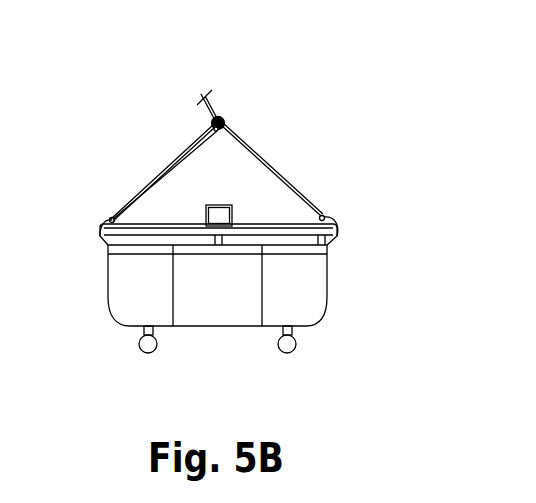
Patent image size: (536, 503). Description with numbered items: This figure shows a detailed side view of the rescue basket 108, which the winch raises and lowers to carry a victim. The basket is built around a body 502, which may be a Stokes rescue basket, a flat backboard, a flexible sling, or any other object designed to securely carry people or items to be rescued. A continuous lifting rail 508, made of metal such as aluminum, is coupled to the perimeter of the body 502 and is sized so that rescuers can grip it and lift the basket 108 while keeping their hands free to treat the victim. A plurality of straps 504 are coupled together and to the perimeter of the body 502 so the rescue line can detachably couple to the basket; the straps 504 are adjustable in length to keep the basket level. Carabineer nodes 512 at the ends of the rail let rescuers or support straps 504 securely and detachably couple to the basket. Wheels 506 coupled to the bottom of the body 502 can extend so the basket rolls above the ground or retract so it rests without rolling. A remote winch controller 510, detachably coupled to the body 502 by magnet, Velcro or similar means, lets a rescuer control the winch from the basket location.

The rescue basket 108 is at (376, 118).
The body 502 is at (128, 267).
The straps 504 is at (219, 129).
The wheels 506 is at (139, 344).
The lifting rail 508 is at (140, 228).
The remote winch controller 510 is at (222, 214).
The carabineer nodes 512 is at (110, 216).